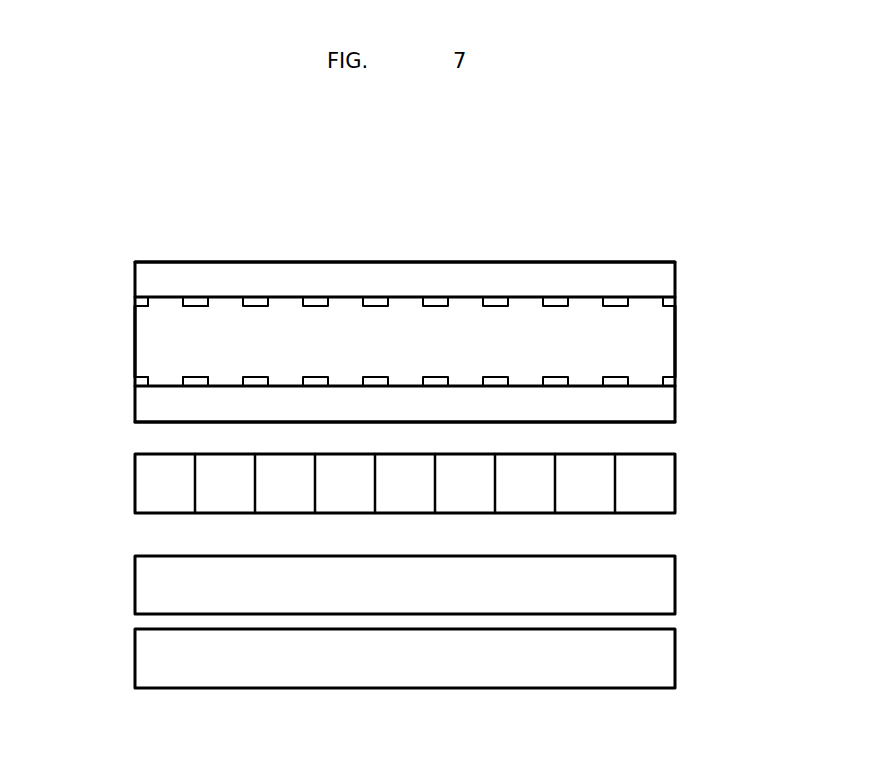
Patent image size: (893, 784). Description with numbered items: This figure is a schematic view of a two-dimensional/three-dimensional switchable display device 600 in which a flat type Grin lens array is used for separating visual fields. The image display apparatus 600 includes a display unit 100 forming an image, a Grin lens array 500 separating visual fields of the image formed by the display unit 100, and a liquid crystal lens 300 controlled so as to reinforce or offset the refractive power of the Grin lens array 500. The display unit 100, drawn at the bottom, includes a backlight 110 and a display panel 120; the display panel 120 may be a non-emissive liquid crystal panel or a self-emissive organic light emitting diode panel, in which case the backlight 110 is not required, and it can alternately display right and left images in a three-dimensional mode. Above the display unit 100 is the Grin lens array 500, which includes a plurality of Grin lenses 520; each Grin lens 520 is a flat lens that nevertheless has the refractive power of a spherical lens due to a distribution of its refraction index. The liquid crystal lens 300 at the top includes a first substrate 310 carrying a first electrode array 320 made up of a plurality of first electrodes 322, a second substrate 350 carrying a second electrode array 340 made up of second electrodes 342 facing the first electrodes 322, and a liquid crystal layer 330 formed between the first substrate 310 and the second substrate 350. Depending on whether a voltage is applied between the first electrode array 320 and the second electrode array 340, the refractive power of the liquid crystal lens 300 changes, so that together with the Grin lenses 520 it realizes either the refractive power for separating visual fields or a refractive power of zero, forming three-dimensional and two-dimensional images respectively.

The 2D-3D switchable display device 600 is at (112, 233).
The liquid crystal lens 300 is at (795, 270).
The second substrate 350 is at (675, 274).
The second electrode array 340 is at (694, 305).
The second electrodes 342 is at (188, 308).
The liquid crystal layer 330 is at (675, 337).
The first electrode array 320 is at (694, 385).
The first electrodes 322 is at (188, 377).
The first substrate 310 is at (675, 405).
The Grin lens array 500 is at (696, 489).
The Grin lens 520 is at (585, 463).
The display unit 100 is at (750, 577).
The display panel 120 is at (675, 585).
The backlight 110 is at (675, 661).